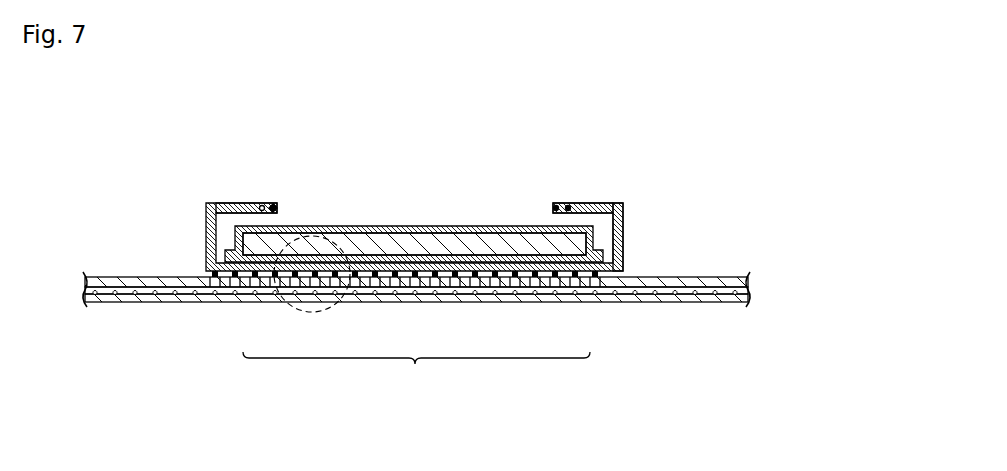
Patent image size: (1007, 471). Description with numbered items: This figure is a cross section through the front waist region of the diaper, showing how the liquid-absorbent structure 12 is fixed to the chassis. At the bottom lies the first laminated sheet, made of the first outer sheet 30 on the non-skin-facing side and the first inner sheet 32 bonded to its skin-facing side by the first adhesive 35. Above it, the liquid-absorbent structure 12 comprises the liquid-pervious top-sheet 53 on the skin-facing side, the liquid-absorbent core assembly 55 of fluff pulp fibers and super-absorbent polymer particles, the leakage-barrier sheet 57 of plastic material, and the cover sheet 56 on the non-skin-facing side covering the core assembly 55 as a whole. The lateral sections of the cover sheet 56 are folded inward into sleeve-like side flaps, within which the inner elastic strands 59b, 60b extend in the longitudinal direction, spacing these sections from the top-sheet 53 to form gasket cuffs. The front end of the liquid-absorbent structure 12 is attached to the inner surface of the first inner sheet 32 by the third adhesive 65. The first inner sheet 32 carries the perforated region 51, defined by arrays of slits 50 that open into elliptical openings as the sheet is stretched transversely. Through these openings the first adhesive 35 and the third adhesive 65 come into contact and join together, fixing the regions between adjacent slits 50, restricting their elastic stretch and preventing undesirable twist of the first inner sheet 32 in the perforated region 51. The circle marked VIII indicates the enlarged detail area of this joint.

The liquid-absorbent structure 12 is at (447, 207).
The first outer sheet 30 is at (416, 293).
The first inner sheet 32 is at (712, 277).
The first adhesive 35 is at (612, 288).
The slits 50 is at (467, 286).
The perforated region 51 is at (416, 376).
The top-sheet 53 is at (390, 226).
The liquid-absorbent core assembly 55 is at (465, 245).
The cover sheet 56 is at (623, 214).
The leakage-barrier sheet 57 is at (597, 248).
The inner elastic strand 59b is at (272, 204).
The inner elastic strand 60b is at (568, 204).
The third adhesive 65 is at (608, 273).
The detail view indicator VIII is at (290, 309).